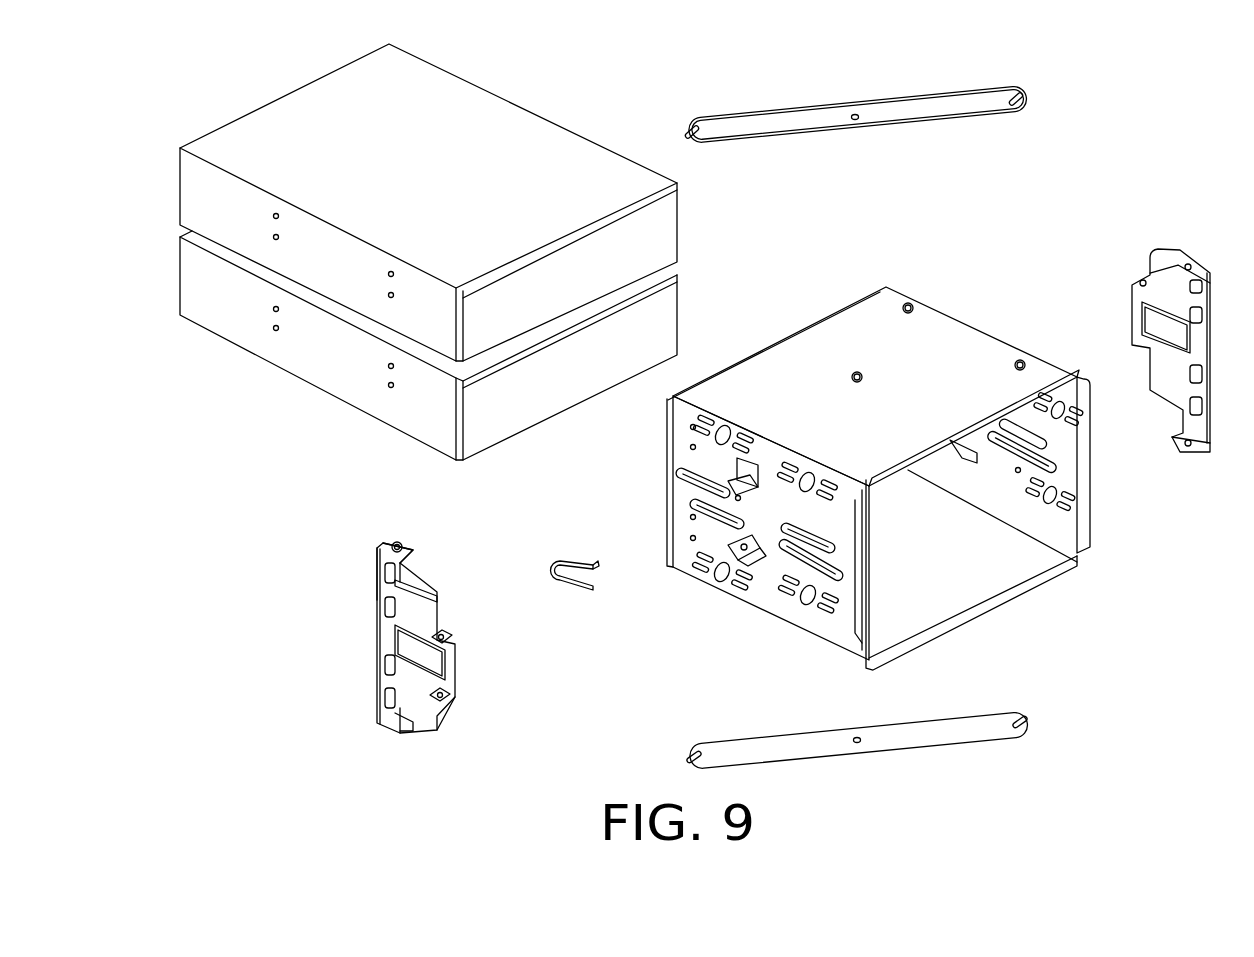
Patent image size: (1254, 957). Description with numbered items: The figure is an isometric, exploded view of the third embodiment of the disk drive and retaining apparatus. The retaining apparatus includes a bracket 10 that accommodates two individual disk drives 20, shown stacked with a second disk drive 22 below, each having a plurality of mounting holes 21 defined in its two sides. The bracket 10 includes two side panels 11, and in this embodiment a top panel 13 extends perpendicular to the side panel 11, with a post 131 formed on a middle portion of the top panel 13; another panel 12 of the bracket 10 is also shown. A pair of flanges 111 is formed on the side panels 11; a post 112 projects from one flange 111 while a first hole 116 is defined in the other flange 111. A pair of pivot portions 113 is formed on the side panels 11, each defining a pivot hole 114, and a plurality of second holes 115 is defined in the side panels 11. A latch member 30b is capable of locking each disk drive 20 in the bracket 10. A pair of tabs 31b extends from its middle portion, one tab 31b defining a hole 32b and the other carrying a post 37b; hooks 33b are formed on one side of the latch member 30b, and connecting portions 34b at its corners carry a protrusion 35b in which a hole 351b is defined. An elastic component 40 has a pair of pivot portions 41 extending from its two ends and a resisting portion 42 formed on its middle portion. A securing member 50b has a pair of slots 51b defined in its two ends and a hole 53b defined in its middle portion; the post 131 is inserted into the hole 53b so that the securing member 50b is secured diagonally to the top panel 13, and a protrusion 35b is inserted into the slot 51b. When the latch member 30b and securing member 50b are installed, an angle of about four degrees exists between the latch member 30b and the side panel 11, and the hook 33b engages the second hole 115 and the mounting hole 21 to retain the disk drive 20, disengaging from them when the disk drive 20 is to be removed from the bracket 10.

The bracket 10 is at (957, 312).
The side panel 11 is at (840, 623).
The flange 111 is at (757, 548).
The post 112 is at (743, 548).
The pivot portion 113 is at (731, 528).
The pivot hole 114 is at (695, 503).
The second hole 115 is at (703, 427).
The first hole 116 is at (735, 482).
The rear side plate of cage 12 is at (1068, 452).
The top panel 13 is at (872, 298).
The post 131 is at (853, 374).
The disk drive 20 is at (451, 101).
The mounting hole 21 is at (278, 238).
The second data storage device 22 is at (392, 387).
The latch member 30b is at (362, 622).
The tab 31b is at (452, 695).
The hole 32b is at (440, 700).
The hook 33b is at (388, 662).
The connecting portion 34b is at (381, 544).
The protrusion 35b is at (398, 542).
The hole 351b is at (395, 543).
The post 37b is at (443, 633).
The elastic component 40 is at (573, 595).
The pivot portion 41 is at (593, 590).
The resisting portion 42 is at (557, 565).
The securing member 50b is at (882, 145).
The slot 51b is at (690, 122).
The hole 53b is at (853, 110).